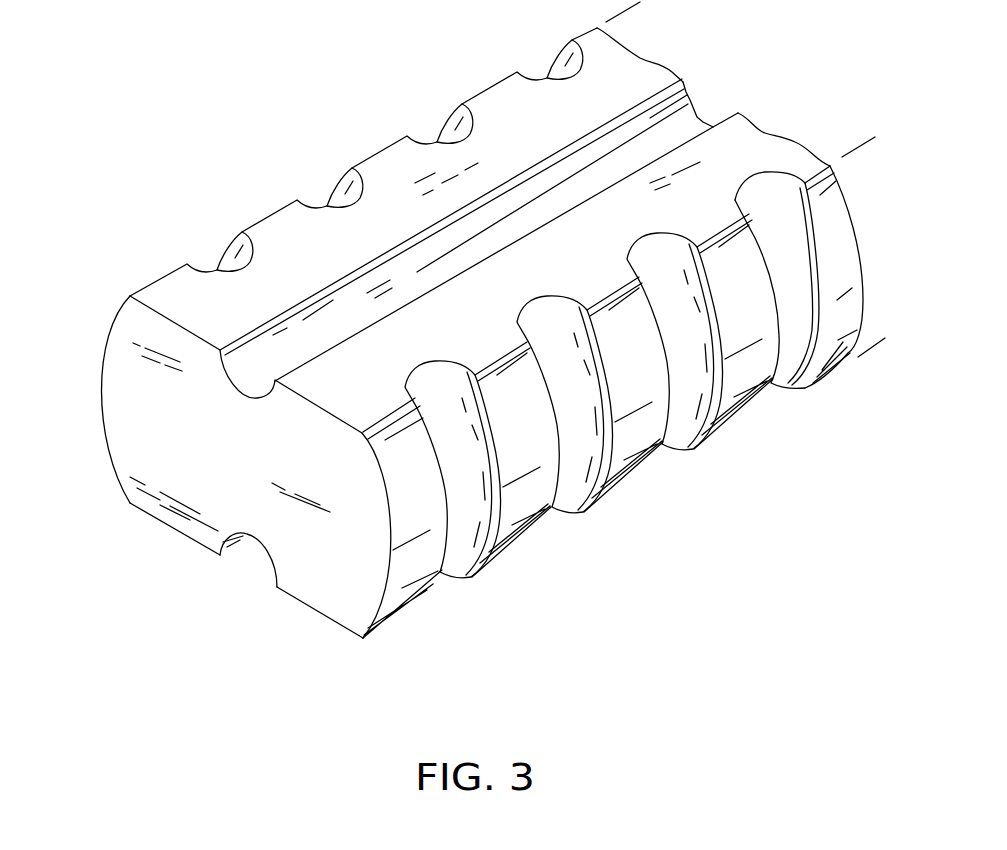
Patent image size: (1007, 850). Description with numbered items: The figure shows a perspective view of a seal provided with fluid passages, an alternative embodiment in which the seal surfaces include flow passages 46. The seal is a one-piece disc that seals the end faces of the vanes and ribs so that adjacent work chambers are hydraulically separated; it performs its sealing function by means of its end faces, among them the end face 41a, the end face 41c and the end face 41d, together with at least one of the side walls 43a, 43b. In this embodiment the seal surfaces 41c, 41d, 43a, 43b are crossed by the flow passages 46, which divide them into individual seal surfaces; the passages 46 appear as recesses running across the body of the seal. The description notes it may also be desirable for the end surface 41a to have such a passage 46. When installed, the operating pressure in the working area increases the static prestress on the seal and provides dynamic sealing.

The end face 41a is at (333, 587).
The end face 41c is at (180, 295).
The end face 41d is at (175, 533).
The side wall 43a is at (93, 380).
The side wall 43b is at (405, 574).
The flow passage 46 is at (425, 130).